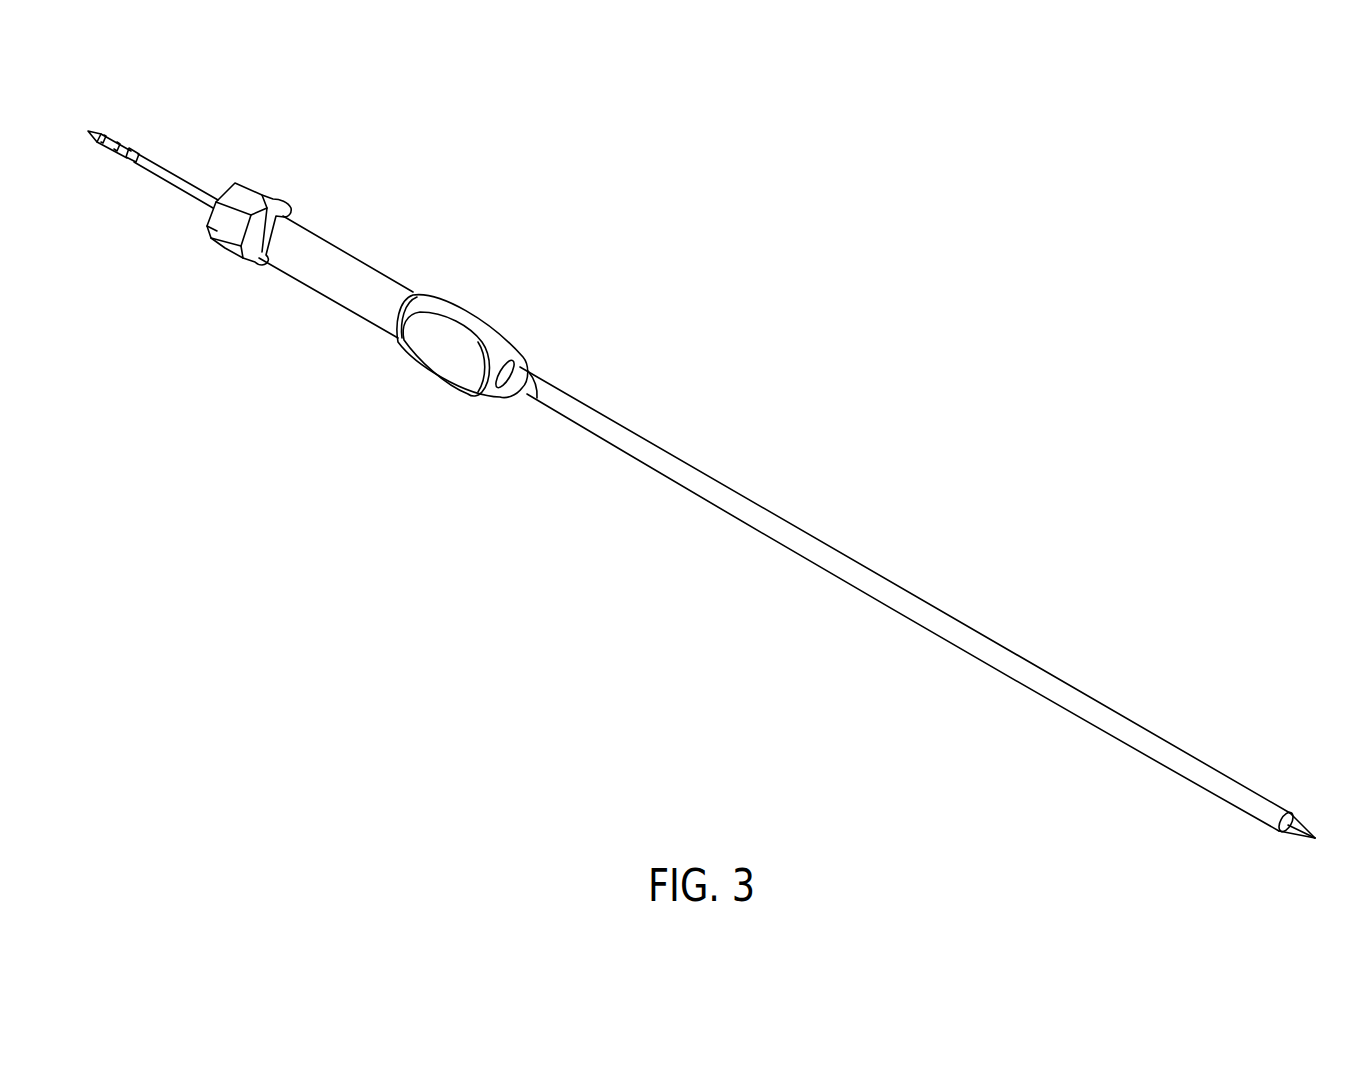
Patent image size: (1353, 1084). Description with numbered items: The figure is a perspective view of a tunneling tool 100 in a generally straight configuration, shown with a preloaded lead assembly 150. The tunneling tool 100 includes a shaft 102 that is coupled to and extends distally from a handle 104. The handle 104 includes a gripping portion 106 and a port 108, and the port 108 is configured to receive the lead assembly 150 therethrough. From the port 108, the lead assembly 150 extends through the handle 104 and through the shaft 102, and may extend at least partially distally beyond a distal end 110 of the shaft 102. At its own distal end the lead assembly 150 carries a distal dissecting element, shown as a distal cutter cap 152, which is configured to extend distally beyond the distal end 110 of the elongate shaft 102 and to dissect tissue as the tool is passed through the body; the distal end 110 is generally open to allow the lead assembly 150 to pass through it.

The tunneling tool 100 is at (880, 474).
The shaft 102 is at (918, 596).
The handle 104 is at (448, 271).
The gripping portion 106 is at (446, 368).
The port 108 is at (192, 216).
The distal end 110 is at (1283, 833).
The lead assembly 150 is at (169, 145).
The distal cutter cap 152 is at (1299, 843).